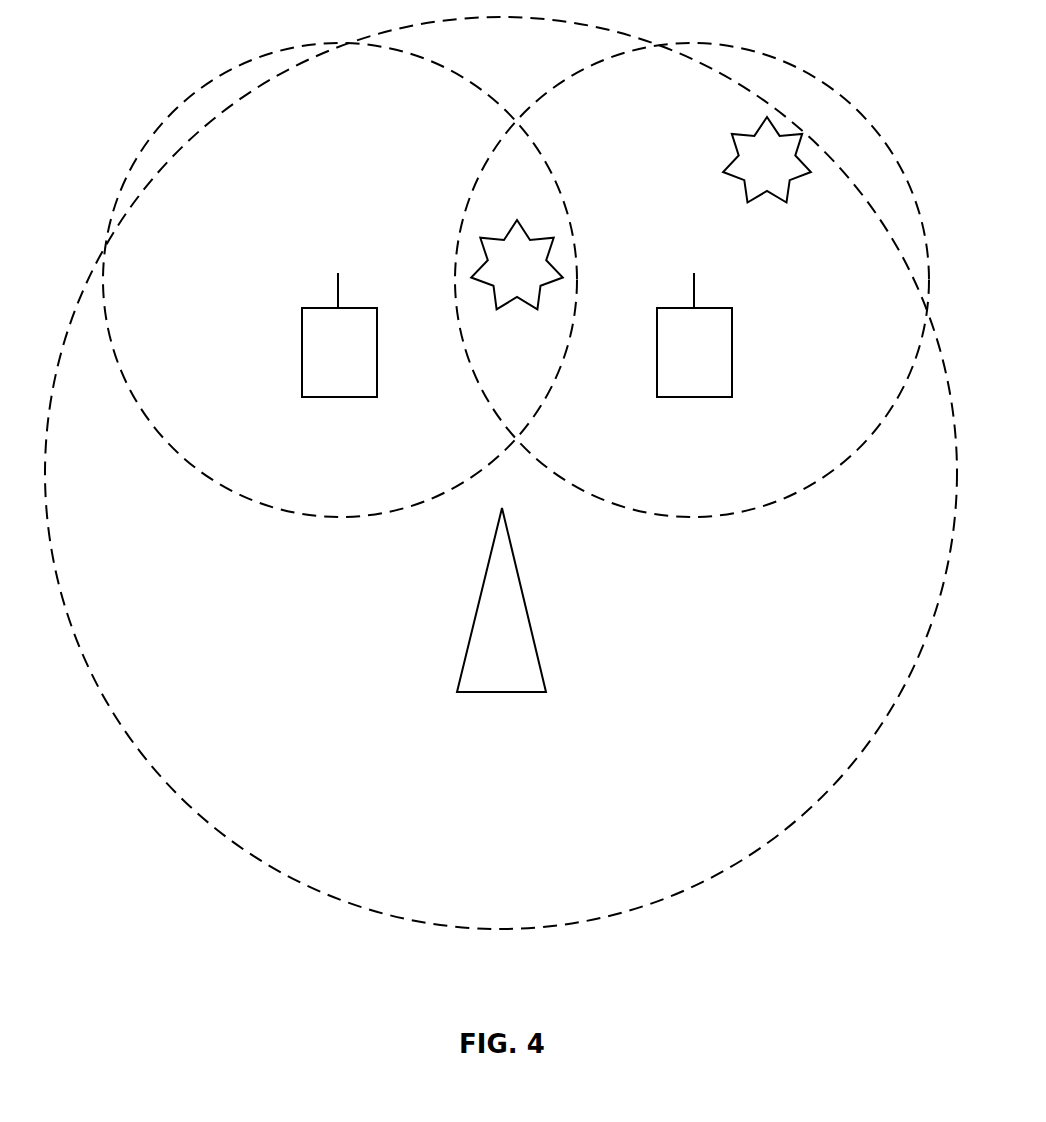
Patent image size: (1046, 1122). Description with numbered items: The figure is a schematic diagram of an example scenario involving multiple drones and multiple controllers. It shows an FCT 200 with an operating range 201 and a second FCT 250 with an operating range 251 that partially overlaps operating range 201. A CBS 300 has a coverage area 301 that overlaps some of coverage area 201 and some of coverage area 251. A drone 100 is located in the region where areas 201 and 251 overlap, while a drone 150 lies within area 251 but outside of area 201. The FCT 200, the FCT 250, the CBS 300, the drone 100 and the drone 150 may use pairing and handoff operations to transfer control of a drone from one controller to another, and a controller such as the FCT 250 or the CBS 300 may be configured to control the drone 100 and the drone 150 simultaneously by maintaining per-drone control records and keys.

The drone 100 is at (517, 264).
The drone 150 is at (767, 160).
The FCT 200 is at (339, 332).
The FCT 250 is at (694, 332).
The CBS 300 is at (502, 591).
The operating range 201 is at (230, 487).
The operating range 251 is at (685, 515).
The coverage area 301 is at (178, 793).